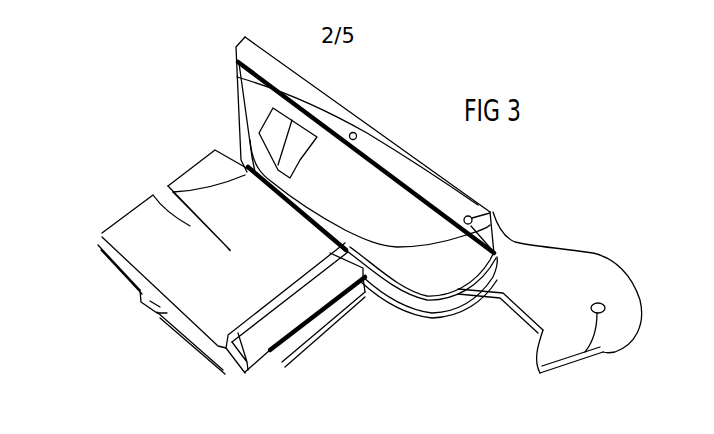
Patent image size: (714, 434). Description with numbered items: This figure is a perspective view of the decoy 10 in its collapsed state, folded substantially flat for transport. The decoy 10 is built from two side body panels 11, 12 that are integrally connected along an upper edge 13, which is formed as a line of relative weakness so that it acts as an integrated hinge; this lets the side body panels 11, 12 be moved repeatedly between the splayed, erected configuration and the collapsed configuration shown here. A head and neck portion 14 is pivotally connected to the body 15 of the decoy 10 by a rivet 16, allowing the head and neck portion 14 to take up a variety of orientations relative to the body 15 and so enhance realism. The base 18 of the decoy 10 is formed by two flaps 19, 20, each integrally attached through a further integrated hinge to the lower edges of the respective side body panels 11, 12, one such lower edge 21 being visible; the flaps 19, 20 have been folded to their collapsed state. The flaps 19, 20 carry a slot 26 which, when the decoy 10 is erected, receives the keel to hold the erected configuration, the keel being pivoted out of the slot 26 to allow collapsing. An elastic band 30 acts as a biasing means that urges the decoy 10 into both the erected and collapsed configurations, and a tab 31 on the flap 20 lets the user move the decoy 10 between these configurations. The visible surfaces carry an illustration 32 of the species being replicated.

The decoy 10 is at (118, 168).
The side body panel 11 is at (447, 276).
The side body panel 12 is at (410, 302).
The upper edge 13 is at (297, 65).
The head and neck portion 14 is at (557, 265).
The body 15 is at (363, 190).
The rivet 16 is at (493, 210).
The base 18 is at (172, 320).
The flap 19 is at (270, 352).
The flap 20 is at (318, 333).
The lower edge 21 is at (240, 168).
The slot 26 is at (173, 225).
The elastic band 30 is at (243, 333).
The tab 31 is at (153, 313).
The illustration 32 is at (283, 133).